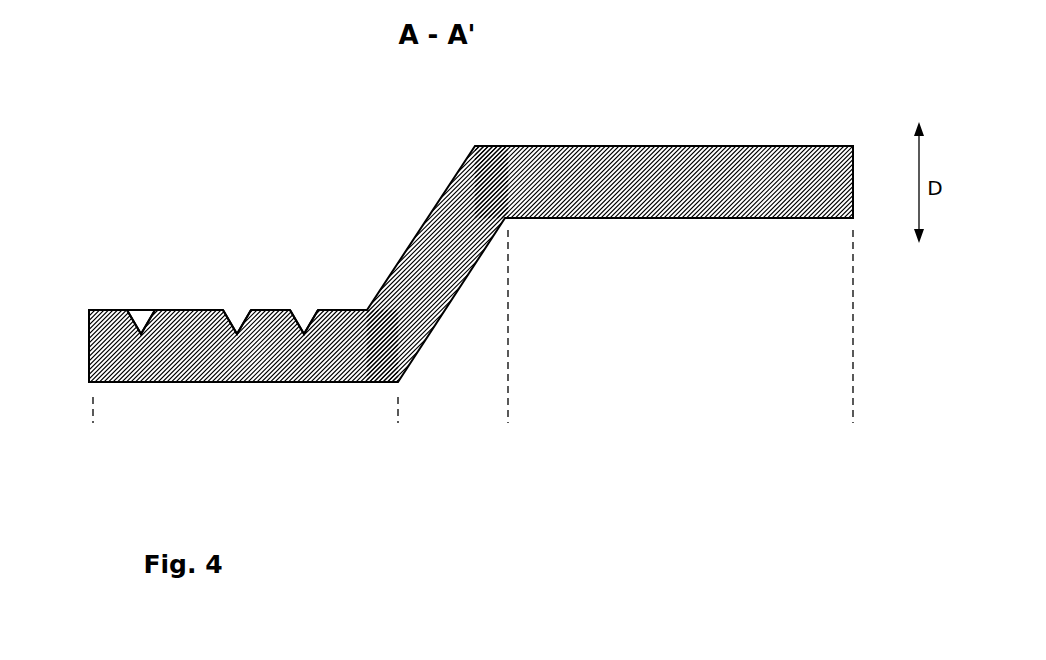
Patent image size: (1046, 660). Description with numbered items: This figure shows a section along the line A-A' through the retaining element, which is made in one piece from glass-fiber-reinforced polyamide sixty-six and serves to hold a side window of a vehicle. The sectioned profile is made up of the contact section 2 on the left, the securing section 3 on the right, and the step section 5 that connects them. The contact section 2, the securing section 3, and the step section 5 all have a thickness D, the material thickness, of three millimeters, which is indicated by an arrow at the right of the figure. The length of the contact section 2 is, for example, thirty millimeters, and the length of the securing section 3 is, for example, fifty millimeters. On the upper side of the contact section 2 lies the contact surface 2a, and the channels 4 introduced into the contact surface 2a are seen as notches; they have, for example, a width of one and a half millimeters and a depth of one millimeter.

The contact section 2 is at (93, 436).
The contact surface 2a is at (110, 310).
The securing section 3 is at (508, 436).
The channel 4 is at (307, 316).
The step section 5 is at (398, 436).